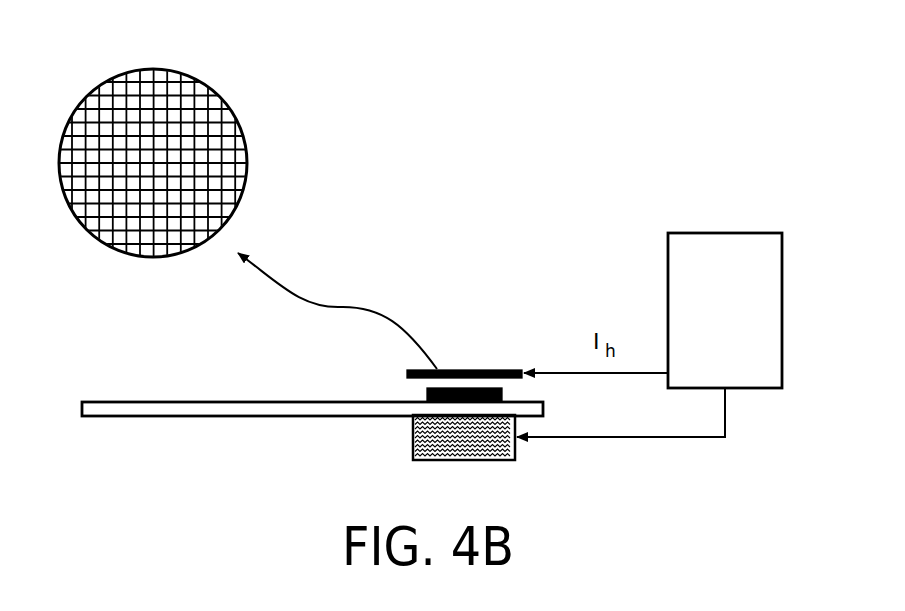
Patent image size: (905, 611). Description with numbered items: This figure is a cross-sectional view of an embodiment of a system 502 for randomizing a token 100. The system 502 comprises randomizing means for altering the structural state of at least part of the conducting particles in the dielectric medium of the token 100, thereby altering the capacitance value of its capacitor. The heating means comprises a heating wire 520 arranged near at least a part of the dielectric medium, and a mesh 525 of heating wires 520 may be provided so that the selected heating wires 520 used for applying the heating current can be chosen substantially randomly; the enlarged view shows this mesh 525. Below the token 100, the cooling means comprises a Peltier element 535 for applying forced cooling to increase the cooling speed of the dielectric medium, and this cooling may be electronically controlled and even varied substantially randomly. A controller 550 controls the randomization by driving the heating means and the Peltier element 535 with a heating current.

The system for randomizing a token 502 is at (560, 89).
The heating wire 520 is at (118, 107).
The mesh of heating wires 525 is at (240, 86).
The token 100 is at (406, 391).
The Peltier element 535 is at (413, 437).
The controller 550 is at (743, 318).